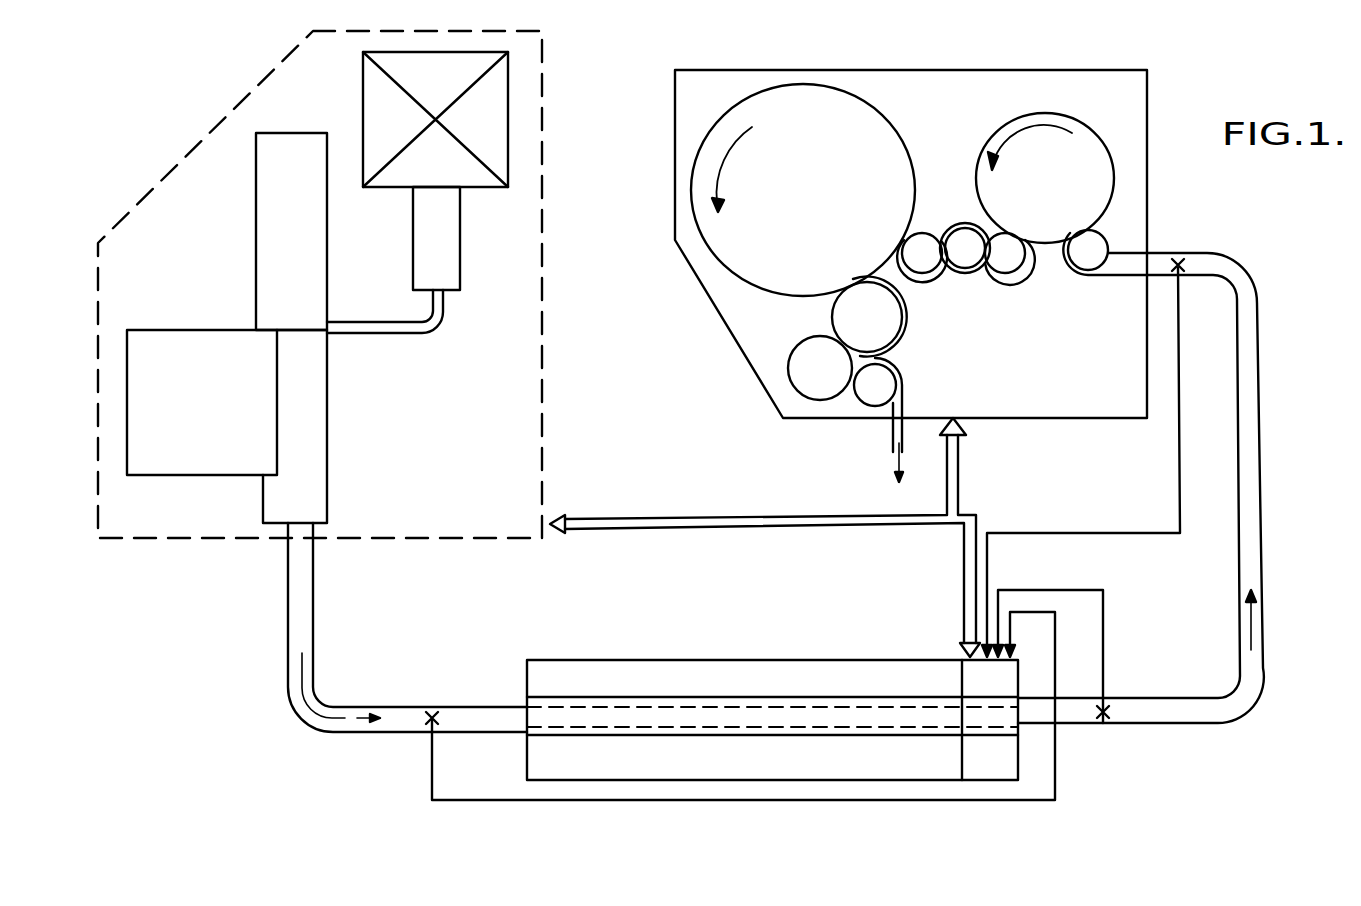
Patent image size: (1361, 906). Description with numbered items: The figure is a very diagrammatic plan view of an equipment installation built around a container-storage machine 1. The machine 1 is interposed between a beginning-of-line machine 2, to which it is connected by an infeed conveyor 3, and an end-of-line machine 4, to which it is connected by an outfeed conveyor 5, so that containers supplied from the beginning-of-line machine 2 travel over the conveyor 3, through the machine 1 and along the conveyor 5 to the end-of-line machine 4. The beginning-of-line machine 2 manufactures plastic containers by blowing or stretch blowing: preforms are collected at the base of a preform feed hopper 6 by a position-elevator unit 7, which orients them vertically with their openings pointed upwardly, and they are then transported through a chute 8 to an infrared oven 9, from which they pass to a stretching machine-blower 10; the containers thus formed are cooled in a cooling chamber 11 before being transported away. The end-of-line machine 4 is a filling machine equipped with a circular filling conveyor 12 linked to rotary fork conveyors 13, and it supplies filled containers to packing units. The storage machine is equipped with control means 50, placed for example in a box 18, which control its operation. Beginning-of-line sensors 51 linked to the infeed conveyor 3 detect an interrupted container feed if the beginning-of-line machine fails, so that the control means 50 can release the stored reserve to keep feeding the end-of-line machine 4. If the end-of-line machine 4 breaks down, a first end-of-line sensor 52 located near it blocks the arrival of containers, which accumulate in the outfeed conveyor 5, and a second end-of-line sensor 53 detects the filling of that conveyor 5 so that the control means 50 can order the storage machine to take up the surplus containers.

The machine for the storage of containers 1 is at (765, 660).
The beginning-of-line machine 2 is at (183, 508).
The infeed conveyor 3 is at (322, 722).
The end-of-line machine 4 is at (1072, 420).
The outfeed conveyor 5 is at (1250, 570).
The preform feed hopper 6 is at (380, 108).
The position-elevator unit 7 is at (430, 247).
The chute 8 is at (372, 333).
The infrared oven 9 is at (277, 270).
The stretching machine-blower 10 is at (167, 368).
The cooling chamber 11 is at (311, 448).
The circular filling conveyor 12 is at (785, 97).
The rotary fork conveyors 13 is at (965, 257).
The box 18 is at (976, 757).
The control means 50 is at (982, 678).
The beginning-of-line sensors 51 is at (440, 710).
The first end-of-line sensor 52 is at (1178, 257).
The second end-of-line sensor 53 is at (1110, 725).